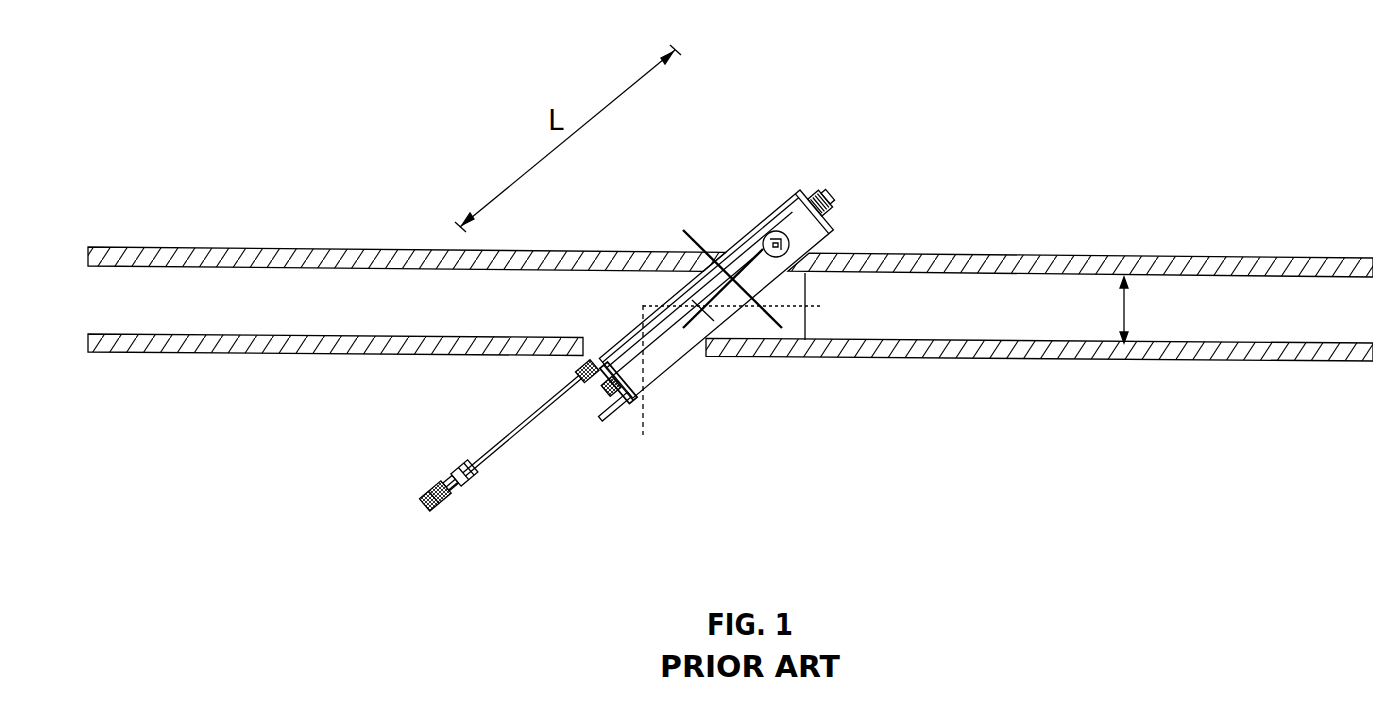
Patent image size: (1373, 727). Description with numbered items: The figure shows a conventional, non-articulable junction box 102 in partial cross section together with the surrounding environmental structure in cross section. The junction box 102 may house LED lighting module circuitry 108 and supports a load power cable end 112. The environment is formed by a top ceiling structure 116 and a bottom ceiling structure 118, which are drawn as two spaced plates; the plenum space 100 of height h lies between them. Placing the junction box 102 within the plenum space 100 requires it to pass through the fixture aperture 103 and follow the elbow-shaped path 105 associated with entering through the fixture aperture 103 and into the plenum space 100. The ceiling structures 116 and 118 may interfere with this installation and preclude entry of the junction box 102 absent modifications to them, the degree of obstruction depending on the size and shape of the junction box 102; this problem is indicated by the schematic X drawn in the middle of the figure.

The plenum space 100 is at (318, 316).
The junction box 102 is at (757, 287).
The fixture aperture 103 is at (695, 358).
The elbow-shaped path 105 is at (643, 432).
The LED lighting module circuitry 108 is at (663, 367).
The load power cable end 112 is at (585, 380).
The top ceiling structure 116 is at (273, 262).
The bottom ceiling structure 118 is at (213, 340).